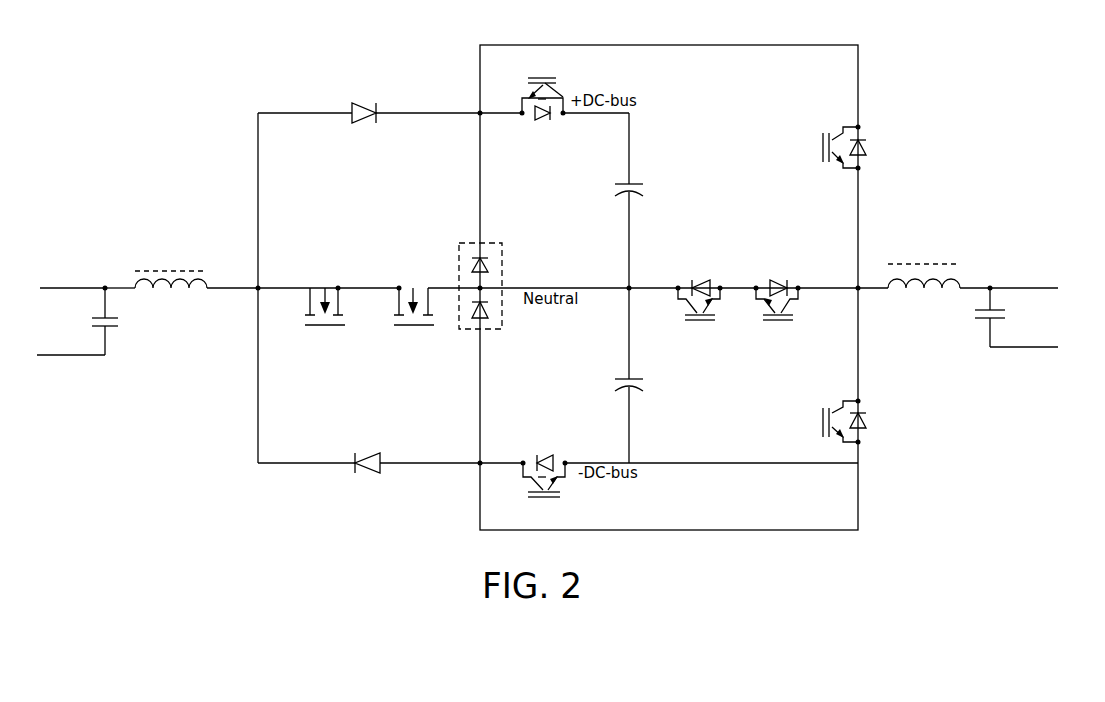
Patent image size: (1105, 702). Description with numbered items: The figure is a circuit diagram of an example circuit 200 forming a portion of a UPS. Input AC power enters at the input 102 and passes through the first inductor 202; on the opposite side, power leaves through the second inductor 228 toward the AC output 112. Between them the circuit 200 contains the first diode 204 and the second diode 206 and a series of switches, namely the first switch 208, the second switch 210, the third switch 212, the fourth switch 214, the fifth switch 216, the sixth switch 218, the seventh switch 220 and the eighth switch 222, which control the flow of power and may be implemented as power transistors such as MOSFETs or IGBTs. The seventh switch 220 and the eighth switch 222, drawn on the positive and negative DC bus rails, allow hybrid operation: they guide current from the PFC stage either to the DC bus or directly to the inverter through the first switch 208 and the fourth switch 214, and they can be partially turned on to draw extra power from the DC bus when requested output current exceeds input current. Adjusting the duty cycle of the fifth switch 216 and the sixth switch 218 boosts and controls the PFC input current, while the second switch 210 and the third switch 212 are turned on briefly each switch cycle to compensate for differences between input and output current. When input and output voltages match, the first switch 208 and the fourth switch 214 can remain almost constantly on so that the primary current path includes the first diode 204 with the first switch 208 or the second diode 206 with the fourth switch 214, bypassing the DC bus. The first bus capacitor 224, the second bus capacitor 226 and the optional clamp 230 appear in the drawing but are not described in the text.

The circuit 200 is at (952, 90).
The input 102 is at (65, 272).
The AC output 112 is at (1028, 262).
The inductor L1 202 is at (170, 252).
The diode D1 204 is at (365, 101).
The diode D2 206 is at (368, 478).
The switch S1 208 is at (870, 145).
The switch S2 210 is at (777, 273).
The switch S3 212 is at (700, 273).
The switch S4 214 is at (870, 420).
The switch S5 216 is at (326, 352).
The switch S6 218 is at (412, 352).
The switch S7 220 is at (565, 88).
The switch S8 222 is at (570, 490).
The capacitor C1 224 is at (648, 177).
The capacitor C2 226 is at (650, 402).
The inductor L2 228 is at (926, 240).
The optional clamp 230 is at (447, 264).